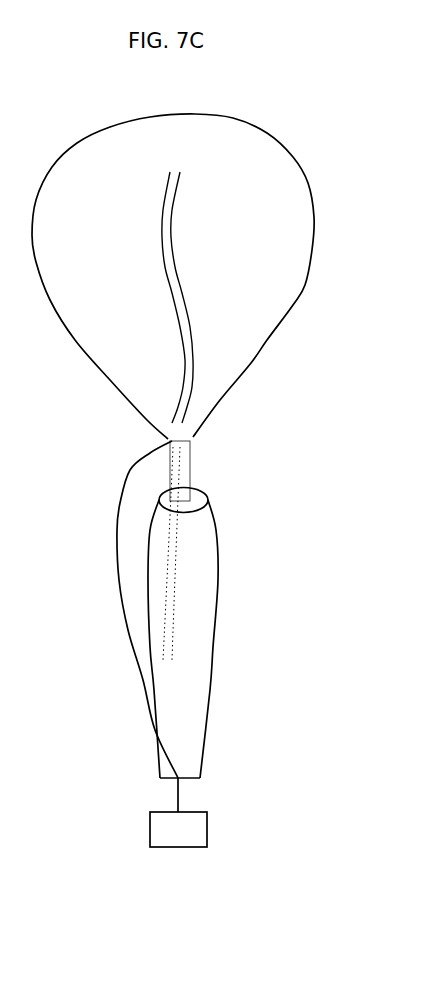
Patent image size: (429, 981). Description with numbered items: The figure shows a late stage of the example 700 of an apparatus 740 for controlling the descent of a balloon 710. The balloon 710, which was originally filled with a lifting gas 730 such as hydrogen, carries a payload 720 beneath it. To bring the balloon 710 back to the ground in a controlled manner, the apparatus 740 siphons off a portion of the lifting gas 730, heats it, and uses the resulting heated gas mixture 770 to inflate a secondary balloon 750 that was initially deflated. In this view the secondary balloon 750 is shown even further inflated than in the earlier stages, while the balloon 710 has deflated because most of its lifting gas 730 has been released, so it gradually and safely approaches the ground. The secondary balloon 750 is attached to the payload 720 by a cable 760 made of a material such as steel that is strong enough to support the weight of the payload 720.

The example 700 is at (384, 48).
The balloon 710 is at (223, 668).
The payload 720 is at (150, 826).
The lifting gas 730 is at (180, 603).
The apparatus 740 is at (192, 476).
The secondary balloon 750 is at (252, 363).
The cable 760 is at (138, 462).
The heated gas mixture 770 is at (180, 278).